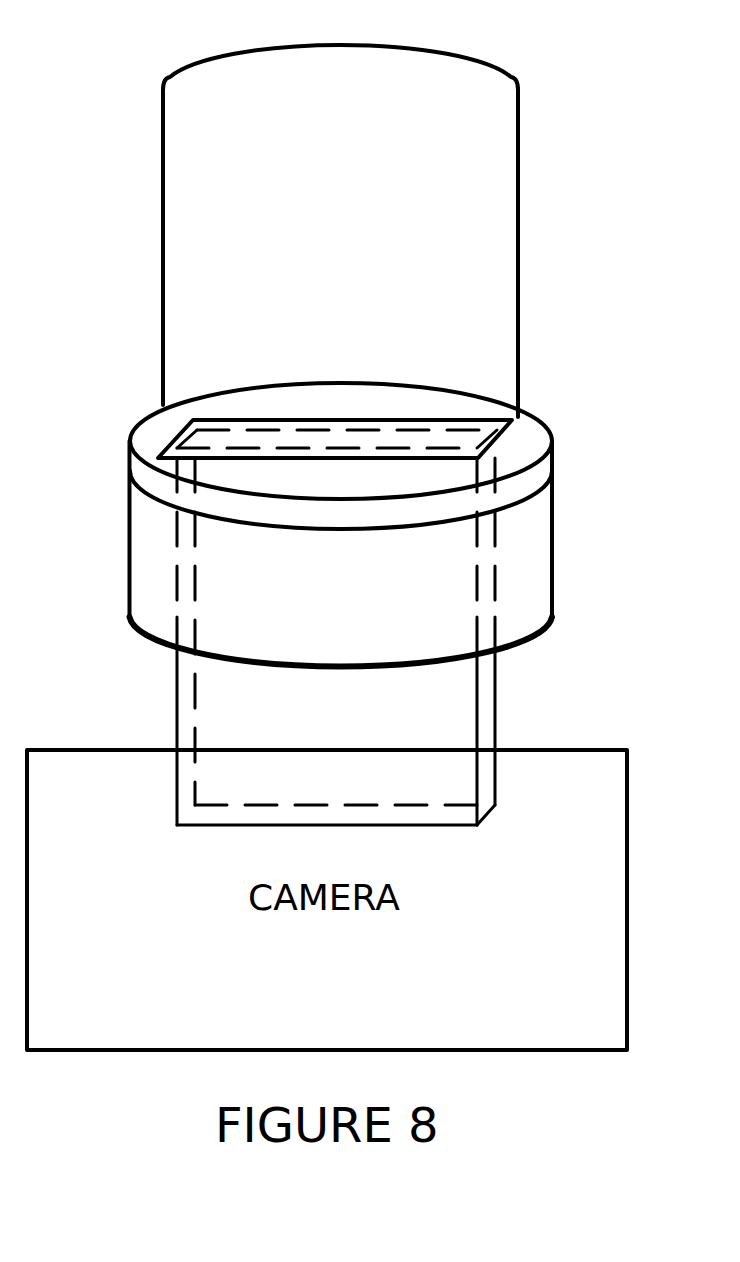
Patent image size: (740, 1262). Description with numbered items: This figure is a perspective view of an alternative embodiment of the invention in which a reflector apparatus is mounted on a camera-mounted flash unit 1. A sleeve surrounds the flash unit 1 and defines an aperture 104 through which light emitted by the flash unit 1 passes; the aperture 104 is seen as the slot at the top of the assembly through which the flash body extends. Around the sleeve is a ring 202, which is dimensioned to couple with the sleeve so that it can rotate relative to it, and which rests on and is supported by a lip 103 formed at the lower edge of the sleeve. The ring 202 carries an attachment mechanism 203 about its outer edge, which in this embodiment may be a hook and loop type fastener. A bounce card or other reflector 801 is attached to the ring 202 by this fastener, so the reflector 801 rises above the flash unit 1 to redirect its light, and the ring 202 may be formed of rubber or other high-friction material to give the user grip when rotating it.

The reflector 801 is at (463, 215).
The aperture 104 is at (473, 452).
The attachment mechanism 203 is at (528, 478).
The ring 202 is at (520, 547).
The lip 103 is at (552, 628).
The flash unit 1 is at (428, 712).